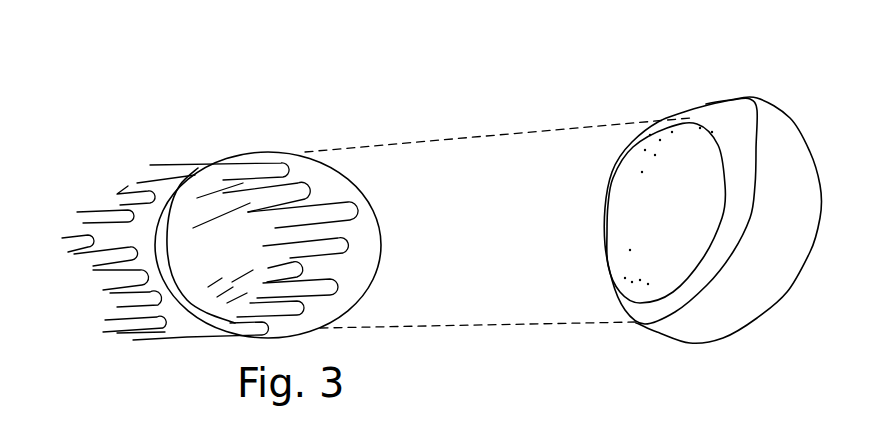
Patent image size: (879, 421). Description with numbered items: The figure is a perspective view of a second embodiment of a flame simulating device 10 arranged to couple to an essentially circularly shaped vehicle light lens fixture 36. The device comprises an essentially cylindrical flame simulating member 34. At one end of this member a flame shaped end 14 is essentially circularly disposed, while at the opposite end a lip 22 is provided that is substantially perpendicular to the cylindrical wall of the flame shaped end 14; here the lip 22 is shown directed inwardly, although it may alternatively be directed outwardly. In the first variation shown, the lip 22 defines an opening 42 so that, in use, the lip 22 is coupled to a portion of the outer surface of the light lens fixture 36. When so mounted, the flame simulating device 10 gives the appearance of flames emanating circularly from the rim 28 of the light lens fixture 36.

The flame simulating device 10 is at (272, 245).
The flame shaped end 14 is at (340, 218).
The lip 22 is at (173, 213).
The rim 28 is at (740, 152).
The essentially cylindrical flame simulating member 34 is at (342, 269).
The essentially circularly shaped light lens fixture 36 is at (647, 331).
The opening 42 is at (208, 232).